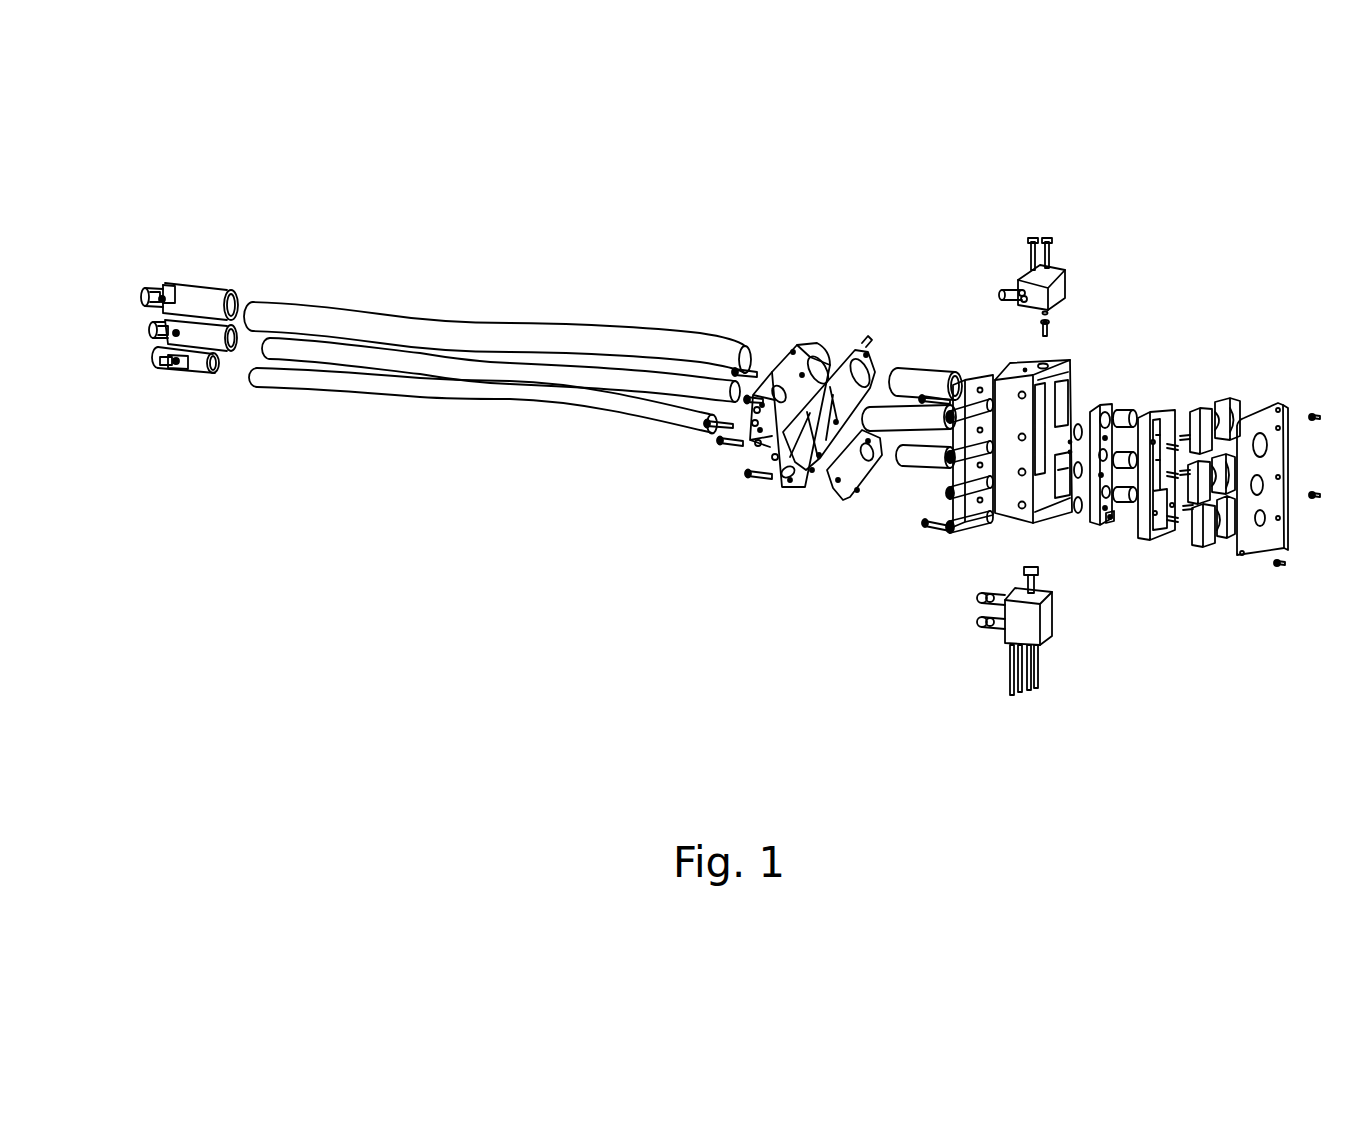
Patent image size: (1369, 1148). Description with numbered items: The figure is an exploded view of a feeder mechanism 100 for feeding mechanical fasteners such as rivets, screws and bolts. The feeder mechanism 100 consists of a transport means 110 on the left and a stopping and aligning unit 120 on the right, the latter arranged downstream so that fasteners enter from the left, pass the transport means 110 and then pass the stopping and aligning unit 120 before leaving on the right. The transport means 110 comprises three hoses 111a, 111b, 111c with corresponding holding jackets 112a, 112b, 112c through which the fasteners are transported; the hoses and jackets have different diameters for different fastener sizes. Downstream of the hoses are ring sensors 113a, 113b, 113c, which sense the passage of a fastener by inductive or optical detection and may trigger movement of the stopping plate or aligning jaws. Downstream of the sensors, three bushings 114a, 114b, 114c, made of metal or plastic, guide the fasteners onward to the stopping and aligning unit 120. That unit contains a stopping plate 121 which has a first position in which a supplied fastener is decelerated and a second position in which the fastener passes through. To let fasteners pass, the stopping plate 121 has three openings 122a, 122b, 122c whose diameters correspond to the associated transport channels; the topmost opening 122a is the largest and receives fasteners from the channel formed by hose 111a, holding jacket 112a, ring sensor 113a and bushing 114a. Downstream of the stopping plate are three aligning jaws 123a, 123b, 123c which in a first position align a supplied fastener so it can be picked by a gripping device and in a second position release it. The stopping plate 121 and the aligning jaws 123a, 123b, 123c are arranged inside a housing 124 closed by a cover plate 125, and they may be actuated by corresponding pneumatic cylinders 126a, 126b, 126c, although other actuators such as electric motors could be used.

The feeder mechanism 100 is at (716, 182).
The transport means 110 is at (985, 708).
The hose 111a is at (360, 328).
The hose 111b is at (455, 367).
The hose 111c is at (538, 393).
The holding jacket 112a is at (188, 294).
The holding jacket 112b is at (200, 337).
The holding jacket 112c is at (193, 375).
The ring sensor 113a is at (803, 373).
The ring sensor 113b is at (752, 455).
The ring sensor 113c is at (800, 480).
The bushing 114a is at (928, 383).
The bushing 114b is at (900, 440).
The bushing 114c is at (922, 462).
The stopping and aligning unit 120 is at (1287, 708).
The stopping plate 121 is at (1103, 522).
The opening 122a is at (1105, 413).
The opening 122b is at (1138, 410).
The opening 122c is at (1113, 523).
The aligning jaw 123a is at (1223, 403).
The aligning jaw 123b is at (1193, 520).
The aligning jaw 123c is at (1222, 540).
The housing 124 is at (1042, 360).
The cover plate 125 is at (1265, 545).
The pneumatic cylinder 126a is at (1057, 275).
The pneumatic cylinder 126b is at (1003, 632).
The pneumatic cylinder 126c is at (1048, 624).